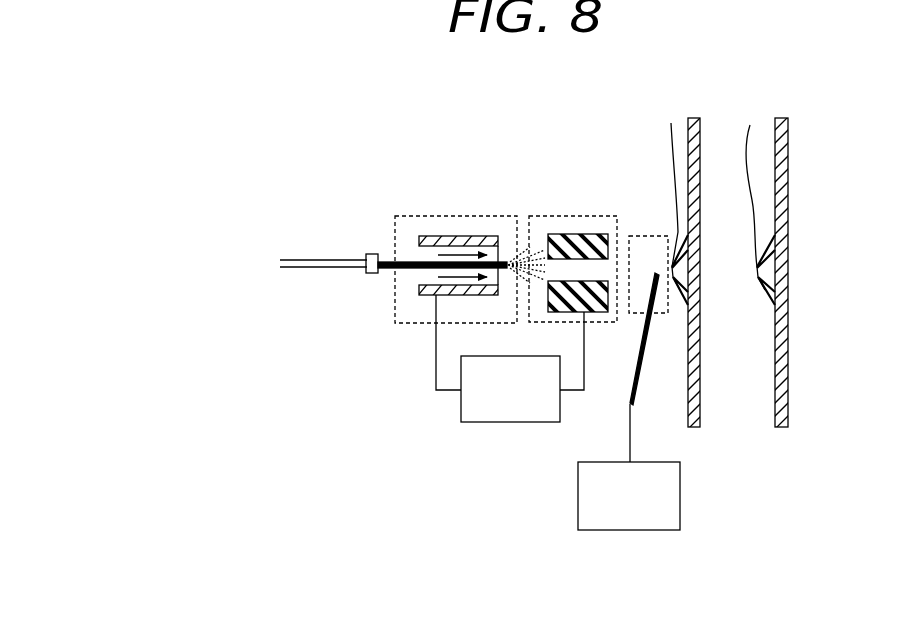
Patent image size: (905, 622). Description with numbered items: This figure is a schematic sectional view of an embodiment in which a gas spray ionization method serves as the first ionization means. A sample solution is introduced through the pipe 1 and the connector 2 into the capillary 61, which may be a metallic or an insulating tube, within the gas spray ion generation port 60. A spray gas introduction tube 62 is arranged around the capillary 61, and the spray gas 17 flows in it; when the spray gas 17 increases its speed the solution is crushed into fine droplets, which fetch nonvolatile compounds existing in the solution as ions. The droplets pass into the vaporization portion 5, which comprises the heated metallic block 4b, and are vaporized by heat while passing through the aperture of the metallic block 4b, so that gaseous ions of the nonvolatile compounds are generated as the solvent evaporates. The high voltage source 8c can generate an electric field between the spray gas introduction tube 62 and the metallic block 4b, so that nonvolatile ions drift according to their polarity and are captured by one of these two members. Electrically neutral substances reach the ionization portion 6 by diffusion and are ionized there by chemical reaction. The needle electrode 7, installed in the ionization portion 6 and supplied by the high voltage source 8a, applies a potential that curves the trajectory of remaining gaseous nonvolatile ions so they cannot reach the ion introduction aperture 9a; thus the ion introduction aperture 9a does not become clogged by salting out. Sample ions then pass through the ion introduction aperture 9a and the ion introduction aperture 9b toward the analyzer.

The pipe 1 is at (305, 259).
The connector 2 is at (368, 254).
The gas spray ion generation port 60 is at (411, 222).
The capillary 61 is at (387, 273).
The spray gas introduction tube 62 is at (440, 240).
The spray gas 17 is at (463, 251).
The metallic block 4b is at (560, 243).
The vaporization portion 5 is at (601, 226).
The ionization portion 6 is at (649, 246).
The needle electrode 7 is at (632, 376).
The high voltage source 8a is at (620, 530).
The high voltage source 8c is at (472, 422).
The ion introduction aperture 9a is at (680, 265).
The ion introduction aperture 9b is at (764, 265).